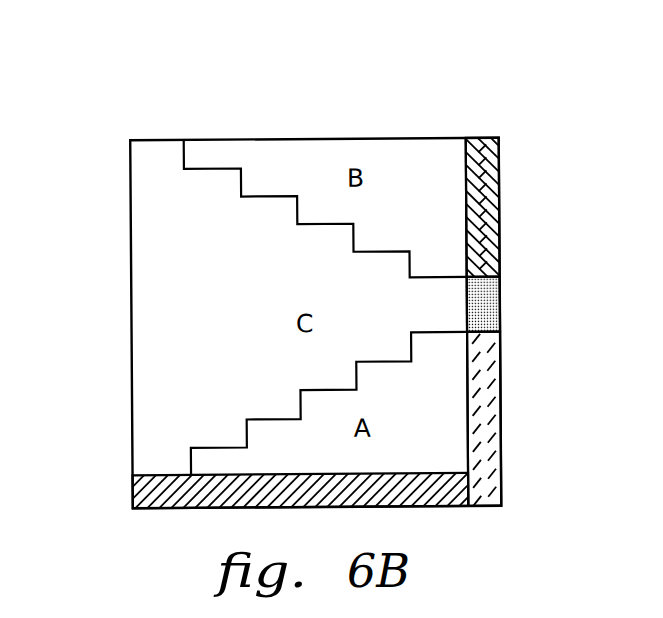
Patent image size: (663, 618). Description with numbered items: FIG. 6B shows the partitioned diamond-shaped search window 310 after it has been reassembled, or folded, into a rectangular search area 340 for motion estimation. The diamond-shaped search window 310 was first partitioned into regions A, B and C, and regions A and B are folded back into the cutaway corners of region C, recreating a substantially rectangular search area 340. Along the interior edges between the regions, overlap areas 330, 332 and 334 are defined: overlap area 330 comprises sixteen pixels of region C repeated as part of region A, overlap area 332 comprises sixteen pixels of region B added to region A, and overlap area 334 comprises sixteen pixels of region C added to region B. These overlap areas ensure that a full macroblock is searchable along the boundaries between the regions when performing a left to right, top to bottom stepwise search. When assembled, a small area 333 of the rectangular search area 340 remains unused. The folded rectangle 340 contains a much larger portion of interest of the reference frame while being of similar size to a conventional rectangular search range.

The rectangular search area 340 is at (432, 131).
The diamond-shaped search window 310 is at (248, 292).
The overlap area 334 is at (490, 192).
The small area 333 is at (490, 329).
The overlap area 330 is at (490, 426).
The overlap area 332 is at (137, 494).